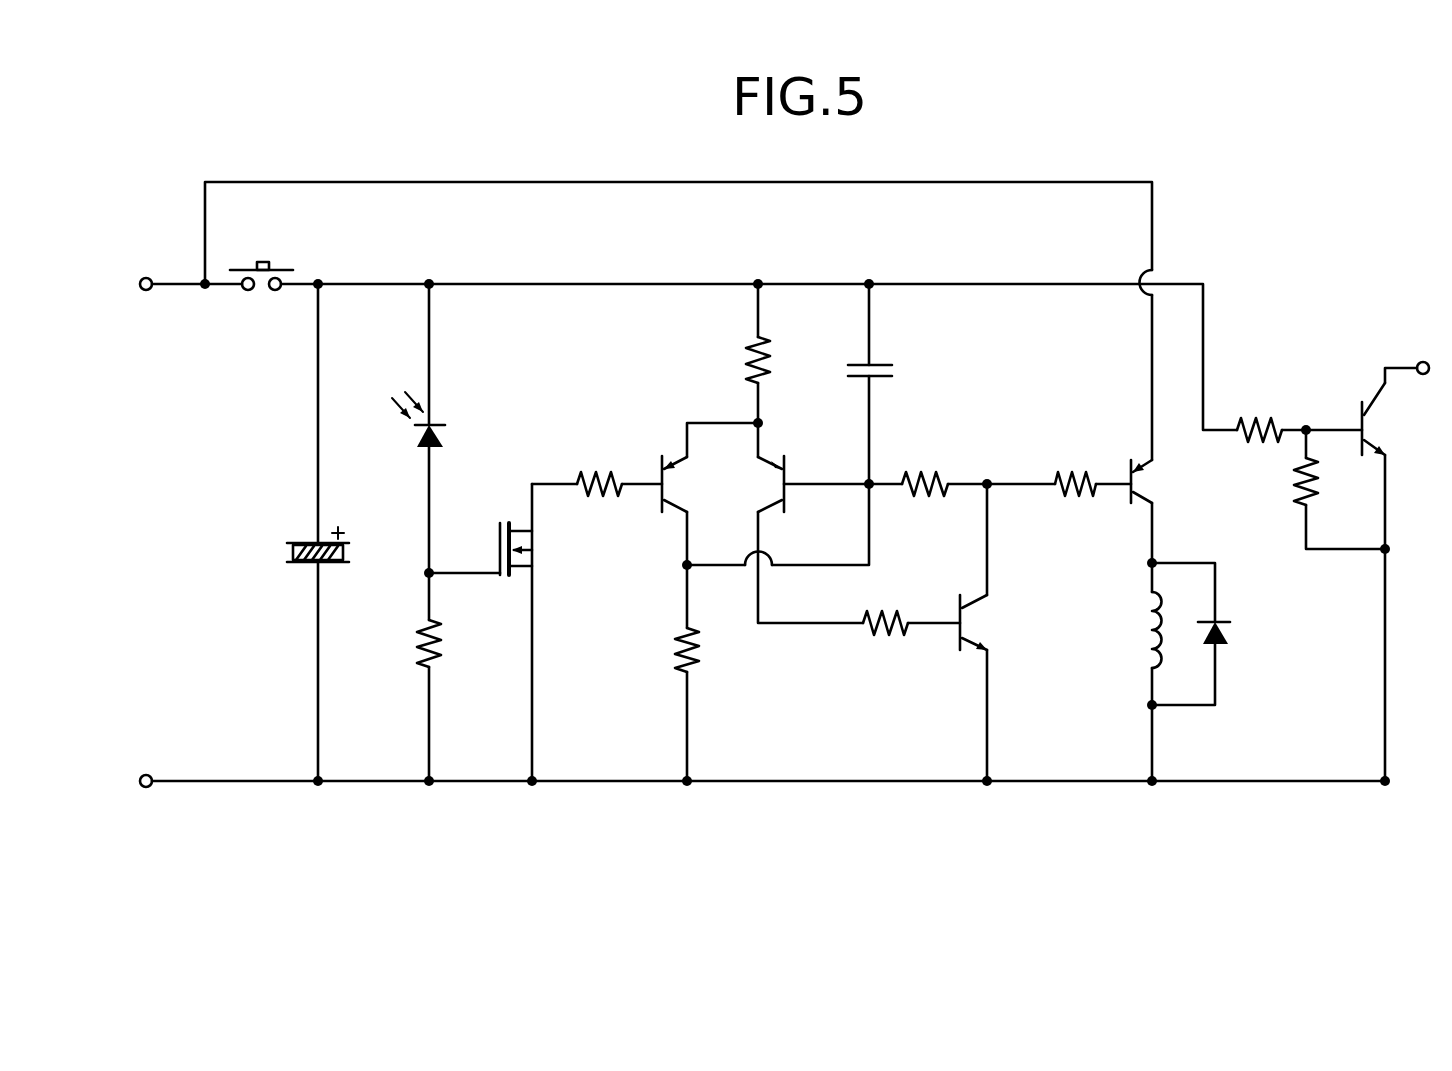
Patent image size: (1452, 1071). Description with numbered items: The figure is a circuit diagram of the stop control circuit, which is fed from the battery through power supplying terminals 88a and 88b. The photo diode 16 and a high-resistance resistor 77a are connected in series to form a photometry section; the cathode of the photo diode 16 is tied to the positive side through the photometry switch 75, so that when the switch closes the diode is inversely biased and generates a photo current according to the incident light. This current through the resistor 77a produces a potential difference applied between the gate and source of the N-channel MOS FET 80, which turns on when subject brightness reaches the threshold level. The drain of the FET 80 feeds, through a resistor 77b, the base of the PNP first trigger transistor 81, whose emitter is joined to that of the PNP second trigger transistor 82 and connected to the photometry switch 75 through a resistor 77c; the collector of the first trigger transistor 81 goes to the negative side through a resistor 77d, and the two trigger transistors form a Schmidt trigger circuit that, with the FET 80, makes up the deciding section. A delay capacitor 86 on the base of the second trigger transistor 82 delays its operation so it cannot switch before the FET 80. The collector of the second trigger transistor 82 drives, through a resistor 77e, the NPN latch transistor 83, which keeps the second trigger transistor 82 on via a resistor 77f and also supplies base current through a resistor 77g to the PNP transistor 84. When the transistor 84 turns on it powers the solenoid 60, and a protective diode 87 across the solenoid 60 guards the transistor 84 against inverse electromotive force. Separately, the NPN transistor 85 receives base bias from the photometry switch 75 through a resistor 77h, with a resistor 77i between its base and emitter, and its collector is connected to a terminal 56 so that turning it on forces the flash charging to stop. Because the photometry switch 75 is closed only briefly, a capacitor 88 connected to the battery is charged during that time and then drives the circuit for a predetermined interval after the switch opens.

The power supplying terminal 88a is at (146, 276).
The power supplying terminal 88b is at (146, 789).
The capacitor 88 is at (305, 566).
The photometry switch 75 is at (282, 268).
The photo diode 16 is at (437, 424).
The FET 80 is at (500, 530).
The resistor 77a is at (438, 668).
The resistor 77b is at (580, 470).
The resistor 77c is at (748, 340).
The resistor 77d is at (683, 674).
The resistor 77e is at (866, 636).
The resistor 77f is at (938, 478).
The resistor 77g is at (1056, 478).
The resistor 77h is at (1246, 425).
The resistor 77i is at (1302, 508).
The first trigger transistor 81 is at (658, 510).
The second trigger transistor 82 is at (788, 468).
The latch transistor 83 is at (958, 652).
The transistor 84 is at (1131, 508).
The transistor 85 is at (1360, 408).
The delay capacitor 86 is at (890, 362).
The protective diode 87 is at (1222, 618).
The solenoid 60 is at (1150, 658).
The terminal 56 is at (1423, 360).